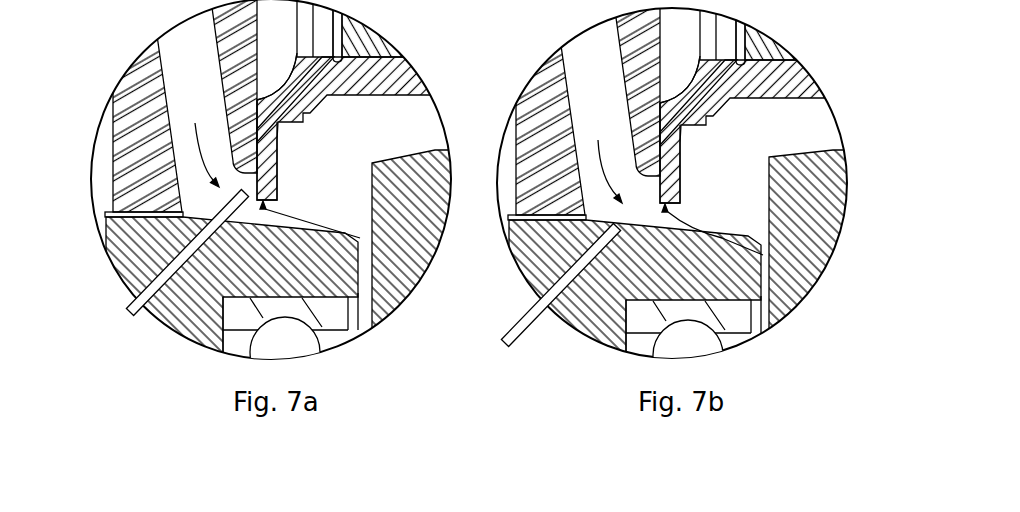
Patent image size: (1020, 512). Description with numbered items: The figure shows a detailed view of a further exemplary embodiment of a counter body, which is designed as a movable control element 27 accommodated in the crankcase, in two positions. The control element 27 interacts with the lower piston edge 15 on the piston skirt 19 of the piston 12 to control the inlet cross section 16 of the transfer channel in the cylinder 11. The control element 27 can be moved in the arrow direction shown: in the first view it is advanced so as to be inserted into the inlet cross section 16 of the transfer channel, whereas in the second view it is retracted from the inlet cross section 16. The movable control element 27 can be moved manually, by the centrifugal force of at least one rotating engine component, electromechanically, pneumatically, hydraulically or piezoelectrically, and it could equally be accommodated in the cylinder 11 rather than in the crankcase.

In FIG. 7A, the cylinder 11 is at (142, 107).
In FIG. 7B, the cylinder 11 is at (538, 97).
In FIG. 7A, the piston 12 is at (353, 77).
In FIG. 7B, the piston 12 is at (758, 77).
In FIG. 7A, the lower piston edge 15 is at (360, 238).
In FIG. 7B, the lower piston edge 15 is at (763, 255).
In FIG. 7A, the inlet cross section 16 is at (200, 140).
In FIG. 7B, the inlet cross section 16 is at (604, 157).
In FIG. 7A, the piston skirt 19 is at (268, 162).
In FIG. 7B, the piston skirt 19 is at (670, 163).
In FIG. 7A, the movable control element 27 is at (122, 281).
In FIG. 7B, the movable control element 27 is at (522, 323).